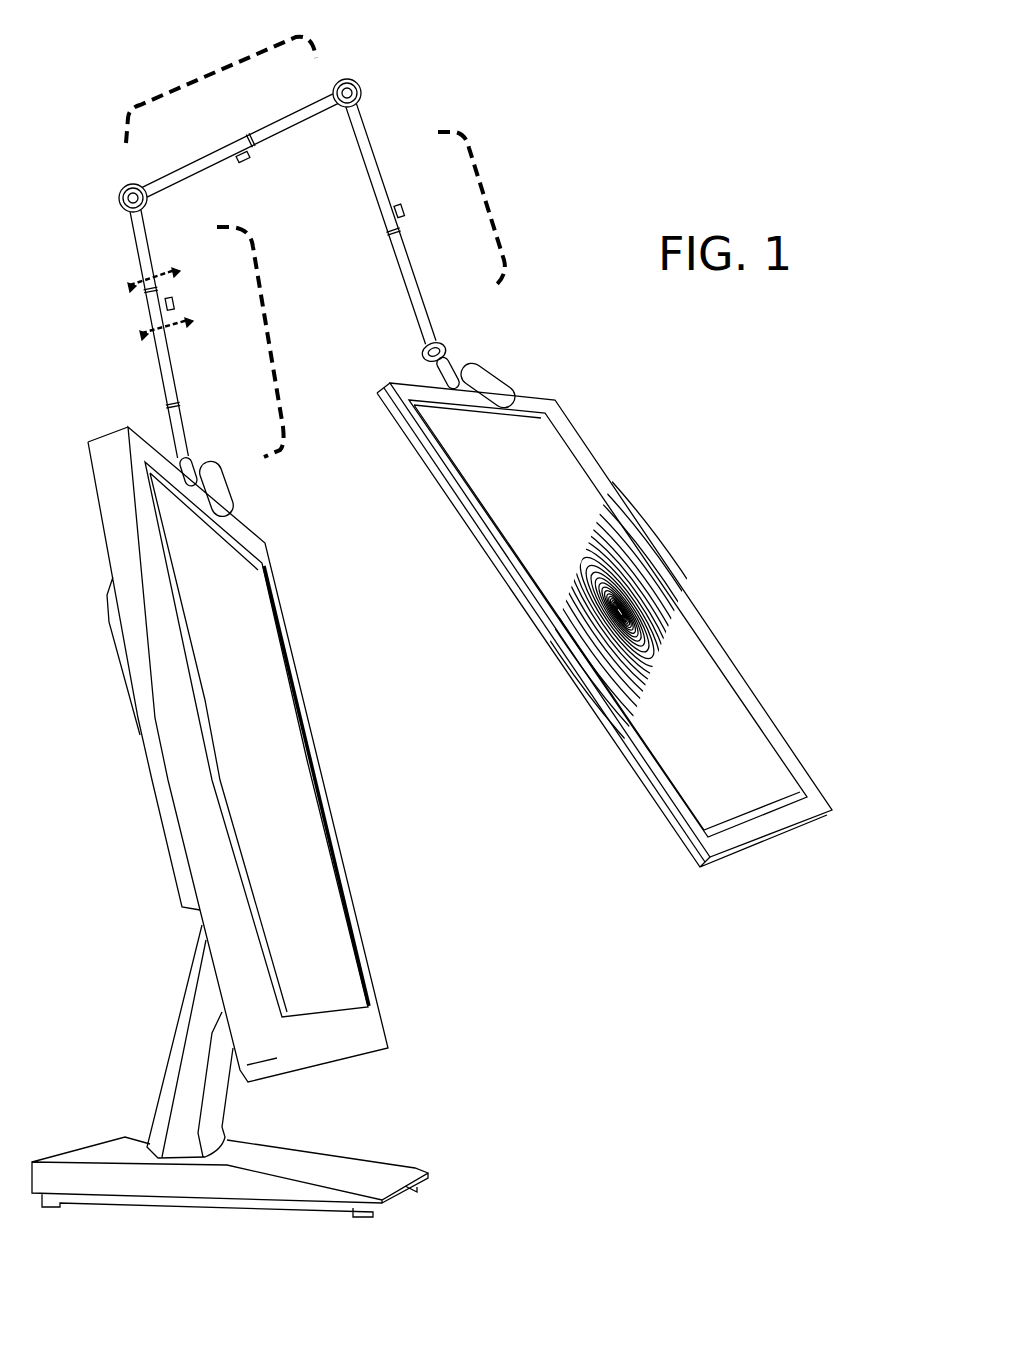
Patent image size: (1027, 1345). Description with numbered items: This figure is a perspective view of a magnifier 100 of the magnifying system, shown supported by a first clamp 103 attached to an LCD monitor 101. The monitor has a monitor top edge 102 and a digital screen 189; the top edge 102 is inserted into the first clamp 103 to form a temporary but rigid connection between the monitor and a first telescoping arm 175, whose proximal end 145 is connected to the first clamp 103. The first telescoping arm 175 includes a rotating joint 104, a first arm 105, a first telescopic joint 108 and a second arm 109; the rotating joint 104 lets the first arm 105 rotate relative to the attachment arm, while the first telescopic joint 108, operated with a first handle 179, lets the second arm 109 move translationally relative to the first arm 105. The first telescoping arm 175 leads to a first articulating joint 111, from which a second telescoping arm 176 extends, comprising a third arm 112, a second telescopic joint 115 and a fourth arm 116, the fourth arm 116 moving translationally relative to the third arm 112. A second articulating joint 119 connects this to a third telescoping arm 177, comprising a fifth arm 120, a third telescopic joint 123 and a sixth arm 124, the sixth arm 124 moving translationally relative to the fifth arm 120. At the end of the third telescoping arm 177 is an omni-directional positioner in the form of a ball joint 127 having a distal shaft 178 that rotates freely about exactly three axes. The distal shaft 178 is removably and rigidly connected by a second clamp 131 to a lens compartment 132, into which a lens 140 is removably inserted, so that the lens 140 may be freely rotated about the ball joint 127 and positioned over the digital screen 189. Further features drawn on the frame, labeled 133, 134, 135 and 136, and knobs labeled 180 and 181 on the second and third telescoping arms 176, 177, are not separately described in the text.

The magnifier 100 is at (593, 102).
The LCD monitor 101 is at (318, 748).
The monitor top edge 102 is at (267, 535).
The first clamp 103 is at (228, 510).
The rotating joint 104 is at (185, 403).
The first arm 105 is at (178, 348).
The first telescopic joint 108 is at (155, 290).
The second arm 109 is at (152, 250).
The first articulating joint 111 is at (122, 202).
The third arm 112 is at (192, 166).
The second telescopic joint 115 is at (248, 140).
The fourth arm 116 is at (305, 108).
The second articulating joint 119 is at (355, 77).
The fifth arm 120 is at (385, 187).
The third telescopic joint 123 is at (395, 228).
The sixth arm 124 is at (410, 270).
The ball joint 127 is at (420, 358).
The second clamp 131 is at (490, 388).
The lens compartment 132 is at (628, 507).
The frame top member 133 is at (557, 401).
The frame side member 134 is at (747, 630).
The frame side member 135 is at (522, 607).
The frame edge 136 is at (462, 518).
The lens 140 is at (717, 780).
The proximal end 145 is at (192, 437).
The first telescoping arm 175 is at (261, 342).
The second telescoping arm 176 is at (221, 90).
The third telescoping arm 177 is at (486, 209).
The distal shaft 178 is at (455, 362).
The first handle 179 is at (178, 305).
The locking knob 180 is at (247, 168).
The locking knob 181 is at (403, 212).
The digital screen 189 is at (293, 893).